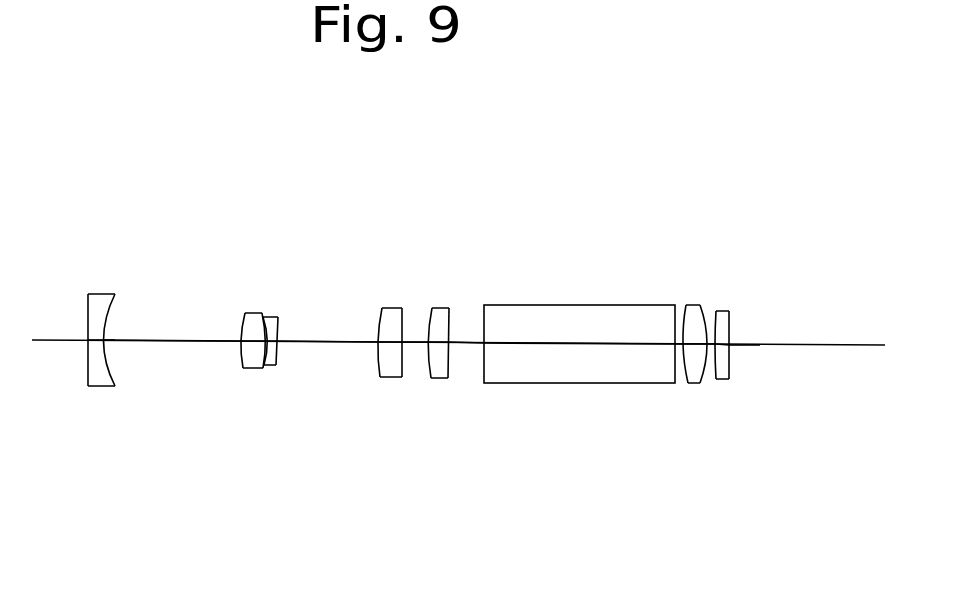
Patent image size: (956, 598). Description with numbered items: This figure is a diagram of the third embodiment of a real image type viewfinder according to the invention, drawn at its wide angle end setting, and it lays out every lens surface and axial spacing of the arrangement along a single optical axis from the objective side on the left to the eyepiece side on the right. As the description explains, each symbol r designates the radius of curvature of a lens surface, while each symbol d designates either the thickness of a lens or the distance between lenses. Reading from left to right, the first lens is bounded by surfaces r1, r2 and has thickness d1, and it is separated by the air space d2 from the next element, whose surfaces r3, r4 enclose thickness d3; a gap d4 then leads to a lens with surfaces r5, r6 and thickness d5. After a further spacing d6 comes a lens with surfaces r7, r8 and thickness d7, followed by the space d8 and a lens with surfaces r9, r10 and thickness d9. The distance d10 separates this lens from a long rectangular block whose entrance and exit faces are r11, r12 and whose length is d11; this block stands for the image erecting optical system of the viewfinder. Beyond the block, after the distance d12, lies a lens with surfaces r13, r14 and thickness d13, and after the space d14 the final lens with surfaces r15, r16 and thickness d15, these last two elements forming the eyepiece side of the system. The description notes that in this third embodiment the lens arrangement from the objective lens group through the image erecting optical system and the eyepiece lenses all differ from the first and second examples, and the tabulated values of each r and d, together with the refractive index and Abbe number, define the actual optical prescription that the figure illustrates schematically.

The radius of curvature of lens surface r1 is at (88, 294).
The radius of curvature of lens surface r2 is at (115, 294).
The radius of curvature of lens surface r3 is at (245, 313).
The radius of curvature of lens surface r4 is at (260, 313).
The radius of curvature of lens surface r5 is at (265, 316).
The radius of curvature of lens surface r6 is at (280, 317).
The radius of curvature of lens surface r7 is at (382, 308).
The radius of curvature of lens surface r8 is at (400, 308).
The radius of curvature of lens surface r9 is at (433, 308).
The radius of curvature of lens surface r10 is at (450, 308).
The radius of curvature of lens surface r11 is at (485, 305).
The radius of curvature of lens surface r12 is at (675, 305).
The radius of curvature of lens surface r13 is at (690, 305).
The radius of curvature of lens surface r14 is at (702, 305).
The radius of curvature of lens surface r15 is at (716, 311).
The radius of curvature of lens surface r16 is at (728, 311).
The thickness of lens or distance between lenses d1 is at (95, 386).
The thickness of lens or distance between lenses d2 is at (174, 341).
The thickness of lens or distance between lenses d3 is at (253, 368).
The thickness of lens or distance between lenses d4 is at (267, 366).
The thickness of lens or distance between lenses d5 is at (277, 366).
The thickness of lens or distance between lenses d6 is at (328, 341).
The thickness of lens or distance between lenses d7 is at (390, 377).
The thickness of lens or distance between lenses d8 is at (416, 342).
The thickness of lens or distance between lenses d9 is at (442, 378).
The thickness of lens or distance between lenses d10 is at (467, 342).
The thickness of lens or distance between lenses d11 is at (579, 343).
The thickness of lens or distance between lenses d12 is at (679, 344).
The thickness of lens or distance between lenses d13 is at (698, 383).
The thickness of lens or distance between lenses d14 is at (718, 379).
The thickness of lens or distance between lenses d15 is at (730, 344).